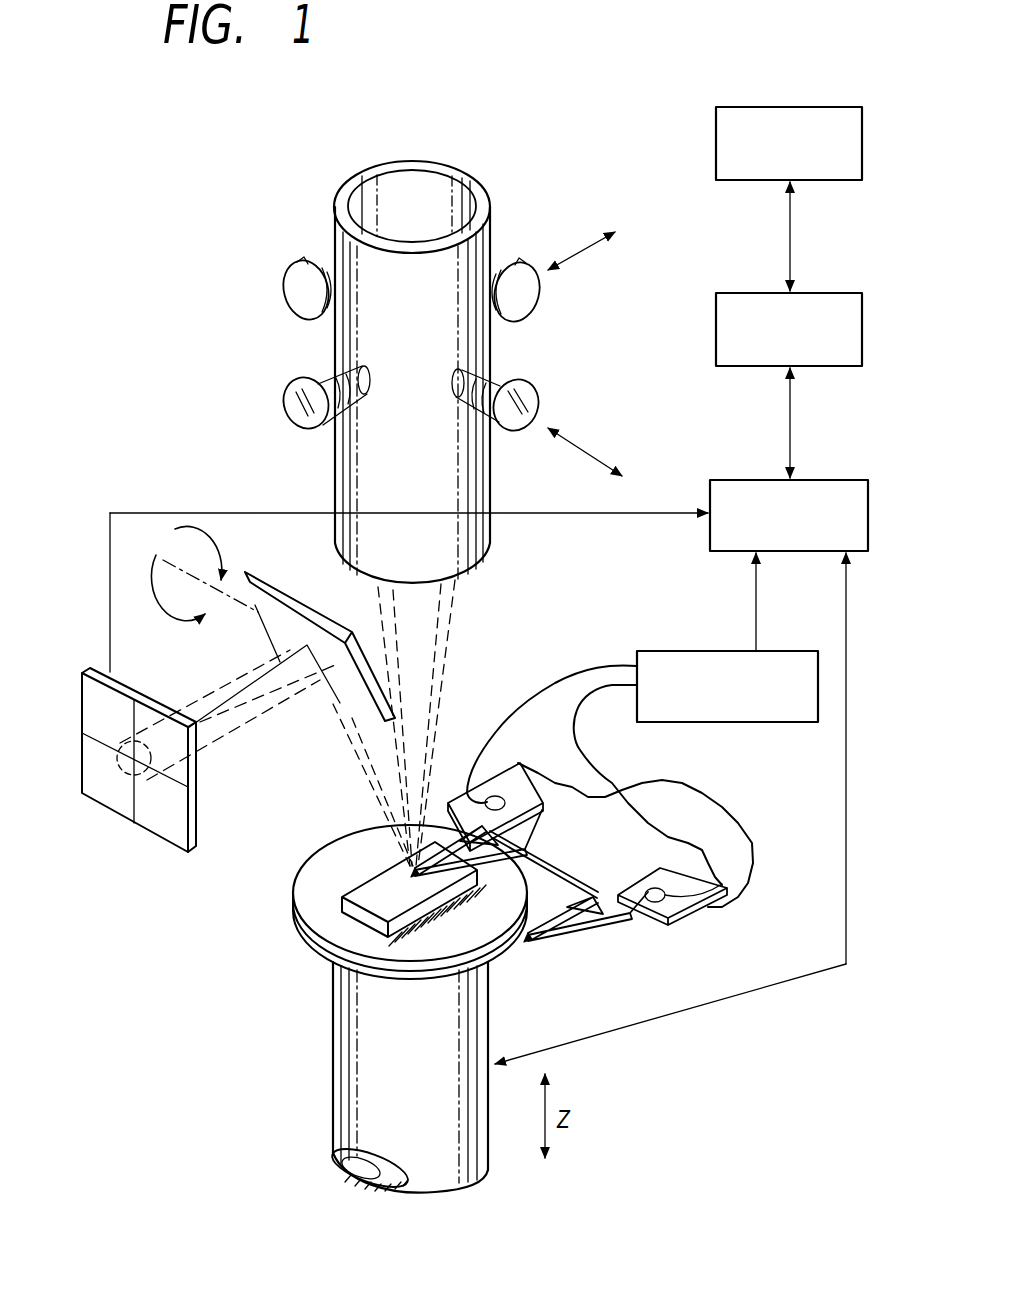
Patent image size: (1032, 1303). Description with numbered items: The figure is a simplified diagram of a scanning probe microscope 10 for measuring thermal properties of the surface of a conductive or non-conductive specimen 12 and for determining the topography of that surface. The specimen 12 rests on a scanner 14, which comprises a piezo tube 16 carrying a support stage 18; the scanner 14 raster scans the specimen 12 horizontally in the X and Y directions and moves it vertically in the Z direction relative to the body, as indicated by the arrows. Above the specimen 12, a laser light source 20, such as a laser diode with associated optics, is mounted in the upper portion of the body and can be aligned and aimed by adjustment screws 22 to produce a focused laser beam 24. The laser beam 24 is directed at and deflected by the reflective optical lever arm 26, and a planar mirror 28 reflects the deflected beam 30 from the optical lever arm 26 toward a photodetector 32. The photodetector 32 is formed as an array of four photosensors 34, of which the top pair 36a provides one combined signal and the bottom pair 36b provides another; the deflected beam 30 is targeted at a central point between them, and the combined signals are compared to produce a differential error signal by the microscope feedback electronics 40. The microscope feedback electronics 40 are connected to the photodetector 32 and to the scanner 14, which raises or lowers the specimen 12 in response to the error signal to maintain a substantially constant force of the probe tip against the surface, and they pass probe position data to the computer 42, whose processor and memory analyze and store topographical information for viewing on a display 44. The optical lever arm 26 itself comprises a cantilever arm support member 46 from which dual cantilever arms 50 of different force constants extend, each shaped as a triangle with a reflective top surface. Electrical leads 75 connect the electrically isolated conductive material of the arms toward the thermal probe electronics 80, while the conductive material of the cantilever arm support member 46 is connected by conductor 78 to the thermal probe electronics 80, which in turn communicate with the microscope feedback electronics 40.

The scanning probe microscope 10 is at (284, 194).
The specimen 12 is at (397, 877).
The scanner 14 is at (330, 1127).
The piezo tube 16 is at (370, 1048).
The support stage 18 is at (333, 867).
The laser light source 20 is at (430, 182).
The adjustment screws 22 is at (284, 282).
The focused laser beam 24 is at (457, 607).
The optical lever arm 26 is at (742, 916).
The planar mirror 28 is at (262, 573).
The deflected beam 30 is at (352, 746).
The photodetector 32 is at (84, 670).
The photosensors 34 is at (105, 713).
The top pair 36a is at (150, 714).
The bottom pair 36b is at (147, 822).
The microscope feedback electronics 40 is at (750, 480).
The computer 42 is at (716, 307).
The display 44 is at (716, 143).
The cantilever arm support member 46 is at (537, 788).
The dual cantilever arms 50 is at (574, 930).
The electrical leads 75 is at (498, 702).
The conductor 78 is at (614, 666).
The thermal probe electronics 80 is at (681, 651).